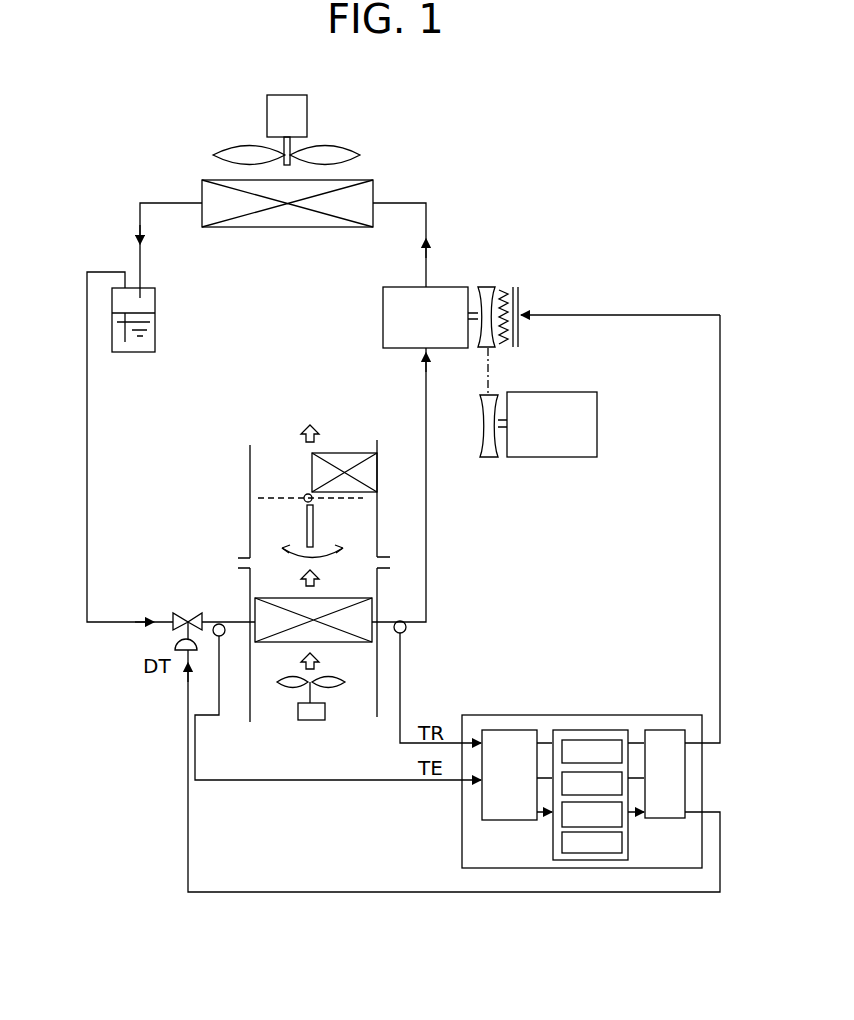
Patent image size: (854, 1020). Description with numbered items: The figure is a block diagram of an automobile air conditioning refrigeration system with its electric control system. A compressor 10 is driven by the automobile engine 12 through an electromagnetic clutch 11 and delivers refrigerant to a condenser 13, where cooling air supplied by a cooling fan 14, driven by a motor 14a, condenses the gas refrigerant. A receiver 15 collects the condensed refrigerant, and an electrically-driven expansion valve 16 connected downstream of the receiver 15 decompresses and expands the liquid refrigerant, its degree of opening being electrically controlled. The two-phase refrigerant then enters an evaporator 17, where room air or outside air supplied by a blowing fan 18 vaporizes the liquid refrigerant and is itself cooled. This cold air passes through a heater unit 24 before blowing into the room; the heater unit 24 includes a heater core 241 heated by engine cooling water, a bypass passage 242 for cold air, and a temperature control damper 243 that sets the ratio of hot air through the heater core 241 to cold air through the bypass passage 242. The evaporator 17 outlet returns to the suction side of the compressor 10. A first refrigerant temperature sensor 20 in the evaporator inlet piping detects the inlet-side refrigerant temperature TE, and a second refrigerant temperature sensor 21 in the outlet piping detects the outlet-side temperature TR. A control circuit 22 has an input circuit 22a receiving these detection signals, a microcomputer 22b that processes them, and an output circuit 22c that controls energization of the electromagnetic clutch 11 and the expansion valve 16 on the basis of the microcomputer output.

The compressor 10 is at (450, 284).
The electromagnetic clutch 11 is at (488, 287).
The automobile engine 12 is at (572, 403).
The condenser 13 is at (225, 204).
The cooling fan 14 is at (236, 157).
The motor 14a is at (300, 117).
The receiver 15 is at (155, 325).
The electrically-driven expansion valve 16 is at (172, 627).
The evaporator 17 is at (290, 633).
The blowing fan 18 is at (290, 688).
The first refrigerant temperature sensor 20 is at (217, 622).
The second refrigerant temperature sensor 21 is at (407, 627).
The control circuit 22 is at (561, 871).
The input circuit 22a is at (507, 821).
The microcomputer 22b is at (628, 838).
The output circuit 22c is at (662, 730).
The heater unit 24 is at (256, 501).
The heater core 241 is at (353, 453).
The bypass passage 242 is at (265, 470).
The temperature control damper 243 is at (305, 525).